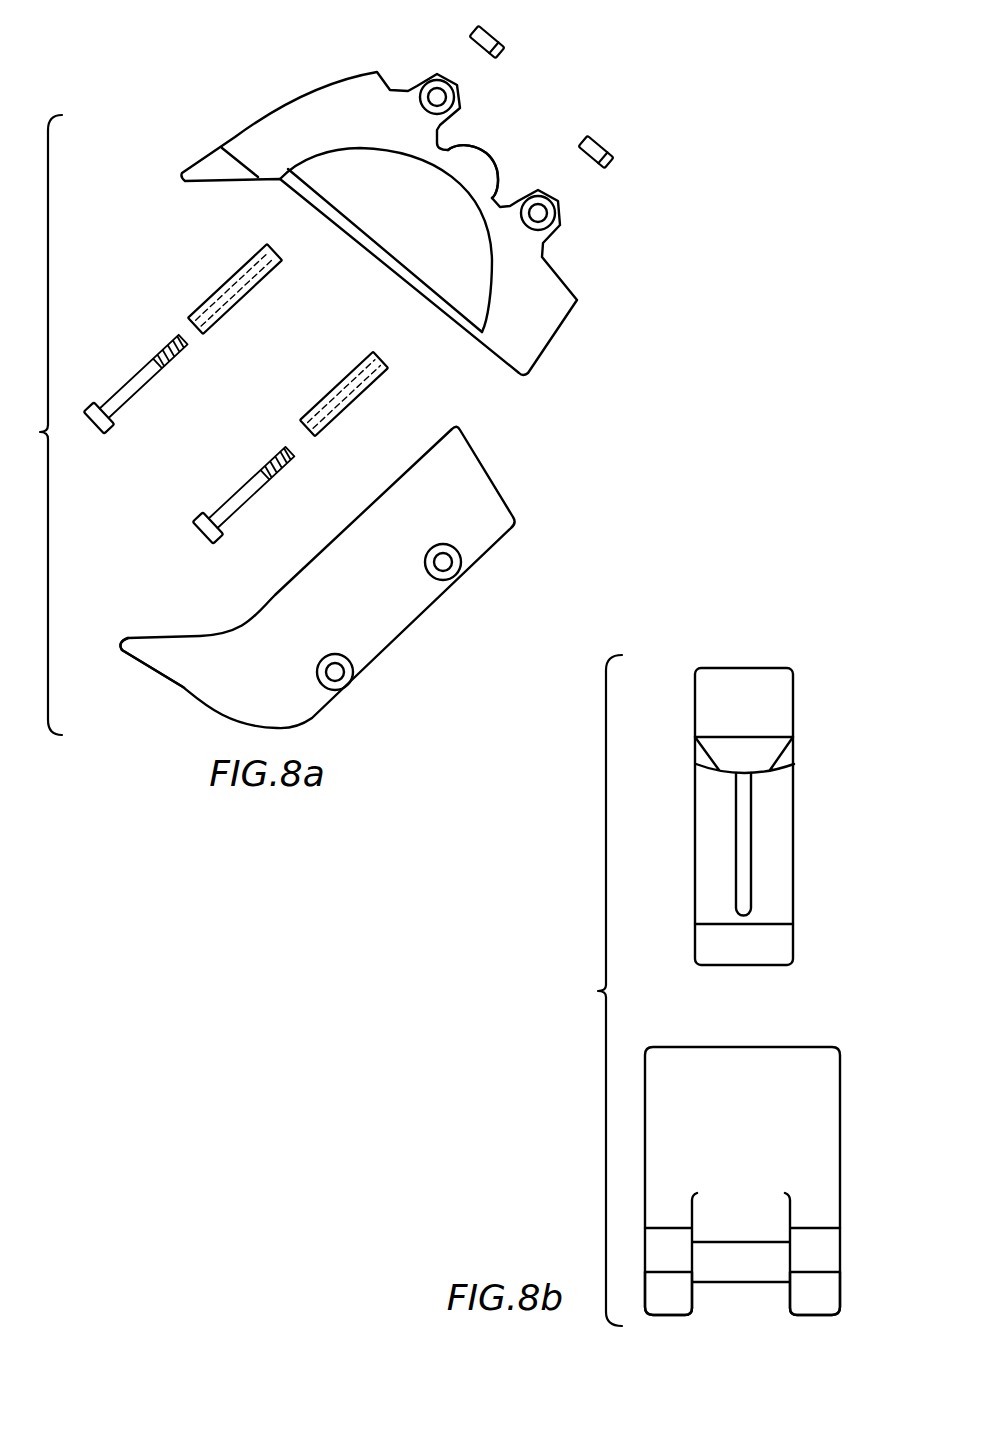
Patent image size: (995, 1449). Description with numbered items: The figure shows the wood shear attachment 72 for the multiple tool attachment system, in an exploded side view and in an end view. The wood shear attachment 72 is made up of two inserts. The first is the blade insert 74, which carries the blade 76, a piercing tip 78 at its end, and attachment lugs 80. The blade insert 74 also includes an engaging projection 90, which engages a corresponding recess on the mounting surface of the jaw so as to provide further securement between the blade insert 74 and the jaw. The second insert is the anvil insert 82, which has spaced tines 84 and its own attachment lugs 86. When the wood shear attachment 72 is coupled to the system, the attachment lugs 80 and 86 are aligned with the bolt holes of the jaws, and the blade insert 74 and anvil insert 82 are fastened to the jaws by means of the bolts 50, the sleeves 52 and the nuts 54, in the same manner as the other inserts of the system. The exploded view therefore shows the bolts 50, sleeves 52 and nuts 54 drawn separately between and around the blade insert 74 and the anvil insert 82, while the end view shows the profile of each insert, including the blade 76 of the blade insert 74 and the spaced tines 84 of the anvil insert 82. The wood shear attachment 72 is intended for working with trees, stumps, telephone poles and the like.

In FIG. 8A, the bolts 50 is at (140, 372).
In FIG. 8A, the sleeves 52 is at (233, 272).
In FIG. 8A, the nuts 54 is at (500, 32).
In FIG. 8A, the wood shear attachment 72 is at (35, 425).
In FIG. 8B, the wood shear attachment 72 is at (593, 990).
In FIG. 8A, the blade insert 74 is at (503, 347).
In FIG. 8B, the blade insert 74 is at (697, 694).
In FIG. 8A, the blade 76 is at (398, 230).
In FIG. 8B, the blade 76 is at (752, 826).
In FIG. 8A, the piercing tip 78 is at (198, 168).
In FIG. 8B, the piercing tip 78 is at (762, 755).
In FIG. 8A, the attachment lugs 80 is at (422, 82).
In FIG. 8A, the anvil insert 82 is at (357, 520).
In FIG. 8B, the anvil insert 82 is at (692, 1052).
In FIG. 8A, the spaced tines 84 is at (125, 637).
In FIG. 8B, the spaced tines 84 is at (693, 1307).
In FIG. 8A, the attachment lugs 86 is at (462, 560).
In FIG. 8A, the engaging projection 90 is at (487, 152).